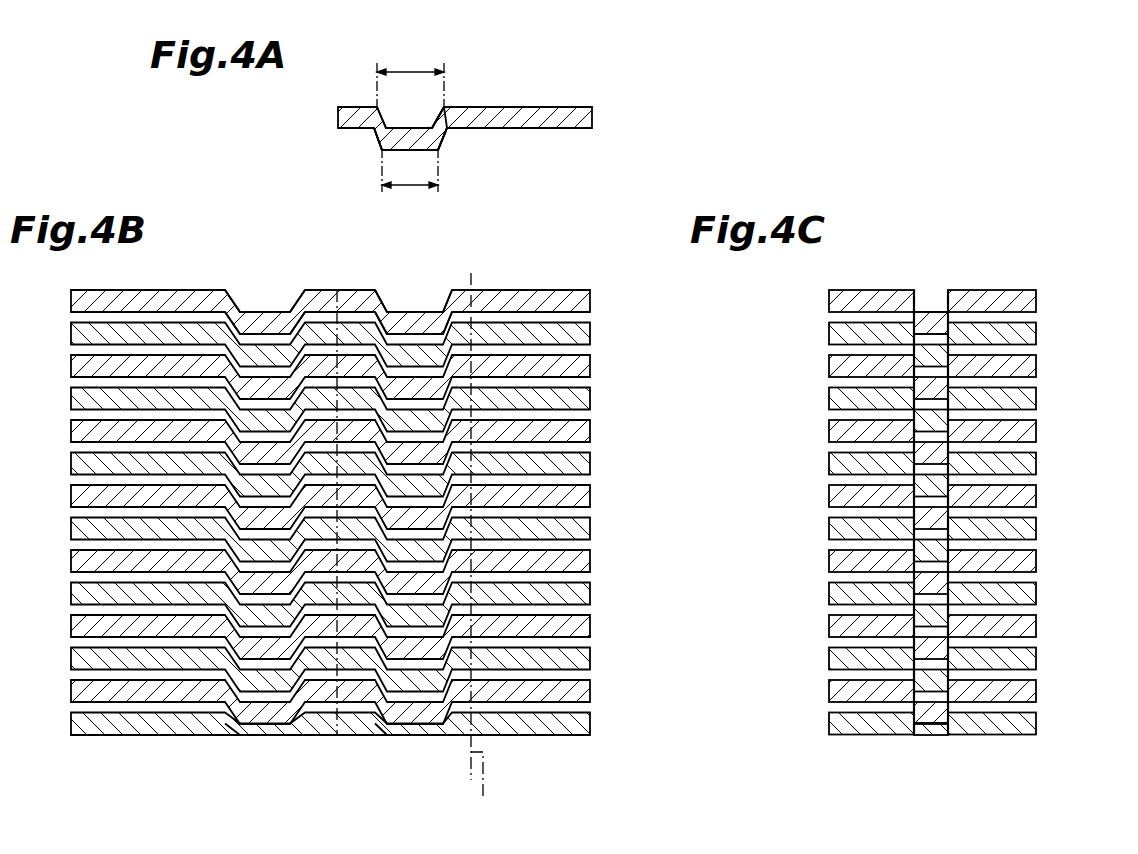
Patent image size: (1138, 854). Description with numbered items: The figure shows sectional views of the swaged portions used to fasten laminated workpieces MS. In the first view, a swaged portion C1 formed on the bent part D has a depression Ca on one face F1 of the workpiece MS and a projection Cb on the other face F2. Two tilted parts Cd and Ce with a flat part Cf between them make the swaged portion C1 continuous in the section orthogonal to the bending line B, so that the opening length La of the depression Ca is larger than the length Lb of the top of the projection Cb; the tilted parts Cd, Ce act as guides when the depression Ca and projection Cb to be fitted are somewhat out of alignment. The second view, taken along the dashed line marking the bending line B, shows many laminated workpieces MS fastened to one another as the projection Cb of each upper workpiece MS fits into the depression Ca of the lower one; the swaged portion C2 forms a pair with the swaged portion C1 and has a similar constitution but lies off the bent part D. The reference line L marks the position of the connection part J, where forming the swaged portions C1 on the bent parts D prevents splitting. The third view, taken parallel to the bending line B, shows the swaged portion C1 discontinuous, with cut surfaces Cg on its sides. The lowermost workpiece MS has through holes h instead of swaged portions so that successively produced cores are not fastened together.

In FIG. 4A, the workpiece MS is at (578, 114).
In FIG. 4B, the workpiece MS is at (576, 300).
In FIG. 4C, the workpiece MS is at (1022, 300).
In FIG. 4A, the swaged portion C1 is at (360, 90).
In FIG. 4B, the swaged portion C1 is at (404, 317).
In FIG. 4C, the swaged portion C1 is at (927, 317).
In FIG. 4B, the swaged portion C2 is at (254, 348).
In FIG. 4A, the depression Ca is at (433, 110).
In FIG. 4A, the projection Cb is at (443, 147).
In FIG. 4A, the tilted part Cd is at (375, 133).
In FIG. 4A, the tilted part Ce is at (447, 135).
In FIG. 4A, the flat part Cf is at (423, 149).
In FIG. 4C, the cut surface Cg is at (911, 308).
In FIG. 4A, the one face F1 is at (543, 107).
In FIG. 4A, the other face F2 is at (538, 129).
In FIG. 4A, the opening length of depression La is at (413, 70).
In FIG. 4A, the length of top of projection Lb is at (413, 187).
In FIG. 4B, the center line of laminated sheets L is at (338, 291).
In FIG. 4B, the bent part D is at (365, 297).
In FIG. 4B, the through hole h is at (240, 737).
In FIG. 4C, the through hole h is at (916, 728).
In FIG. 4B, the connection part J is at (337, 752).
In FIG. 4B, the bending line B is at (483, 550).